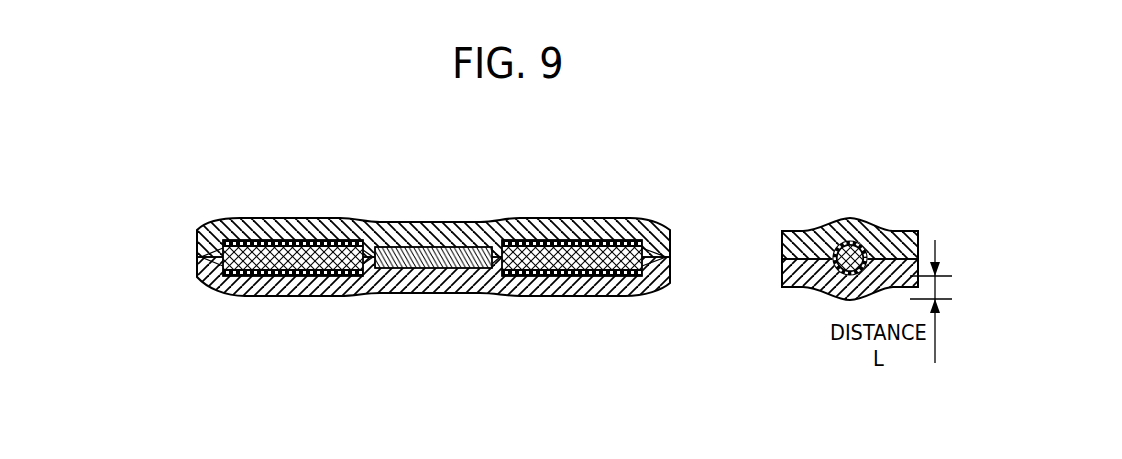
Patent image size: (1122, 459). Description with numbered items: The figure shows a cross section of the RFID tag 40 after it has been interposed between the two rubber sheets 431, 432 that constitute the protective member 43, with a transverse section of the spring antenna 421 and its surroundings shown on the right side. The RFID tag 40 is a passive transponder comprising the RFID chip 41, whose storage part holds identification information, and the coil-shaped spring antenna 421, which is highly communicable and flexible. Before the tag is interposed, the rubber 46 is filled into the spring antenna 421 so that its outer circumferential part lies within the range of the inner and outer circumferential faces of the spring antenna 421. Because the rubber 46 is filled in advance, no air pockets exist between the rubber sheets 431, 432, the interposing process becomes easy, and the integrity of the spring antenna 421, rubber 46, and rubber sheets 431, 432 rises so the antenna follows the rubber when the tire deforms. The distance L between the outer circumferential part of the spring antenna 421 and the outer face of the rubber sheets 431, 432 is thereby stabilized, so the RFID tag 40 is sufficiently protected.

The RFID tag 40 is at (567, 238).
The RFID chip 41 is at (441, 226).
The spring antenna 421 is at (572, 224).
The protective member 43 is at (485, 271).
The rubber sheet 431 is at (519, 285).
The rubber sheet 432 is at (519, 234).
The rubber 46 is at (540, 296).